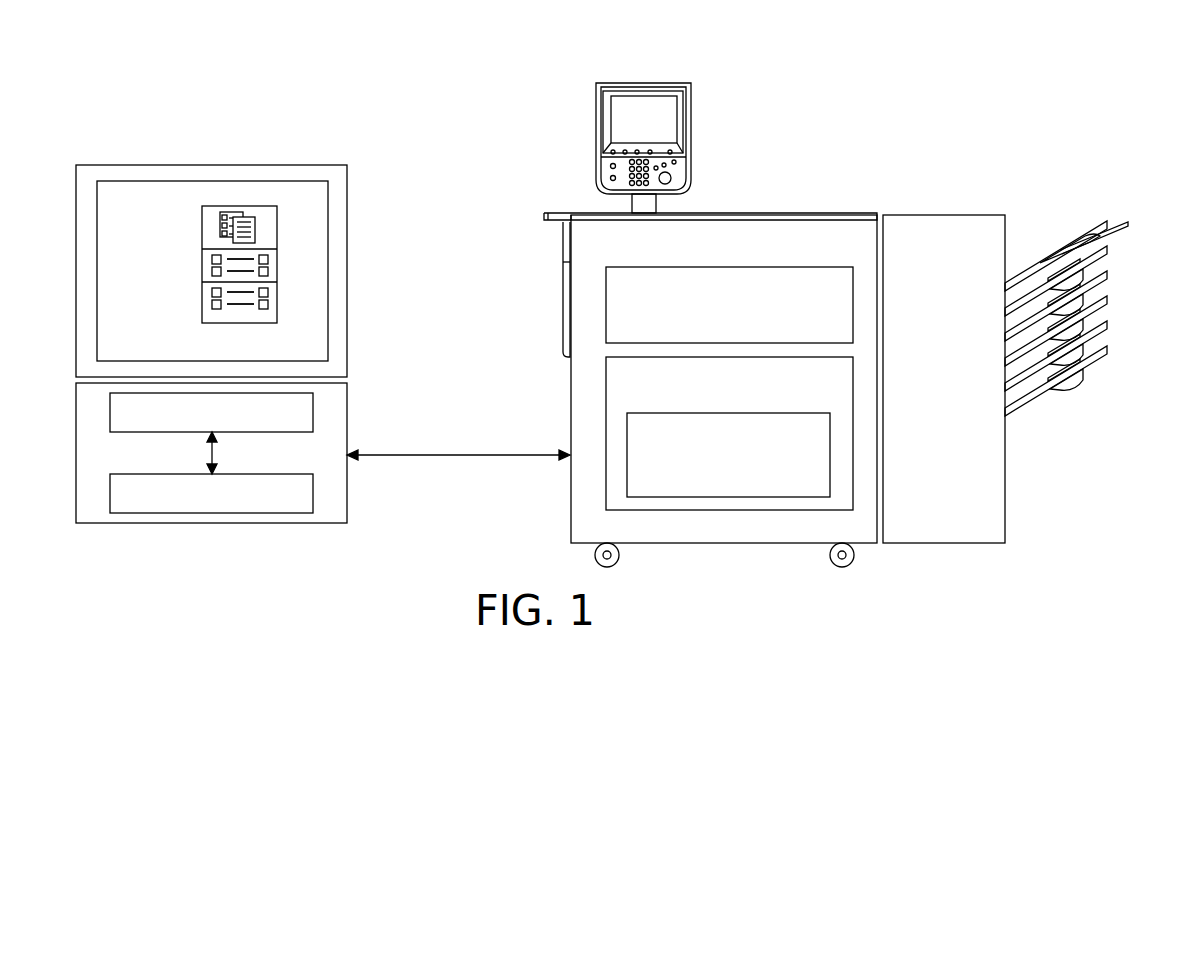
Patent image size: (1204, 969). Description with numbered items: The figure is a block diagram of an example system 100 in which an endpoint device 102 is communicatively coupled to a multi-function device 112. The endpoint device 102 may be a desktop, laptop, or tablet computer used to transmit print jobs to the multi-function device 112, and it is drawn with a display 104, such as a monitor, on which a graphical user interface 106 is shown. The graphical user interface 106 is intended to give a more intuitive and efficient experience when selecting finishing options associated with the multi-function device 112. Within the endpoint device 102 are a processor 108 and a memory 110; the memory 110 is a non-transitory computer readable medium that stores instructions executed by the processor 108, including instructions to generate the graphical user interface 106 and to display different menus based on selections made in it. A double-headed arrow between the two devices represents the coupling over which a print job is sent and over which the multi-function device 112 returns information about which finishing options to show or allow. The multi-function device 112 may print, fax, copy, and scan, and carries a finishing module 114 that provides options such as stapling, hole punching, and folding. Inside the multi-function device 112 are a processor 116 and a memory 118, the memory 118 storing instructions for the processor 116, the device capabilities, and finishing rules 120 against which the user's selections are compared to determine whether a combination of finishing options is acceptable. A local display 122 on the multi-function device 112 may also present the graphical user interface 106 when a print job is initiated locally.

The system 100 is at (338, 84).
The endpoint device 102 is at (347, 427).
The display 104 is at (328, 303).
The graphical user interface 106 is at (277, 226).
The processor 108 is at (313, 414).
The memory 110 is at (313, 494).
The multi-function device 112 is at (796, 213).
The finishing module 114 is at (940, 213).
The processor 116 is at (606, 305).
The memory 118 is at (606, 378).
The finishing rules 120 is at (627, 455).
The local display 122 is at (692, 130).